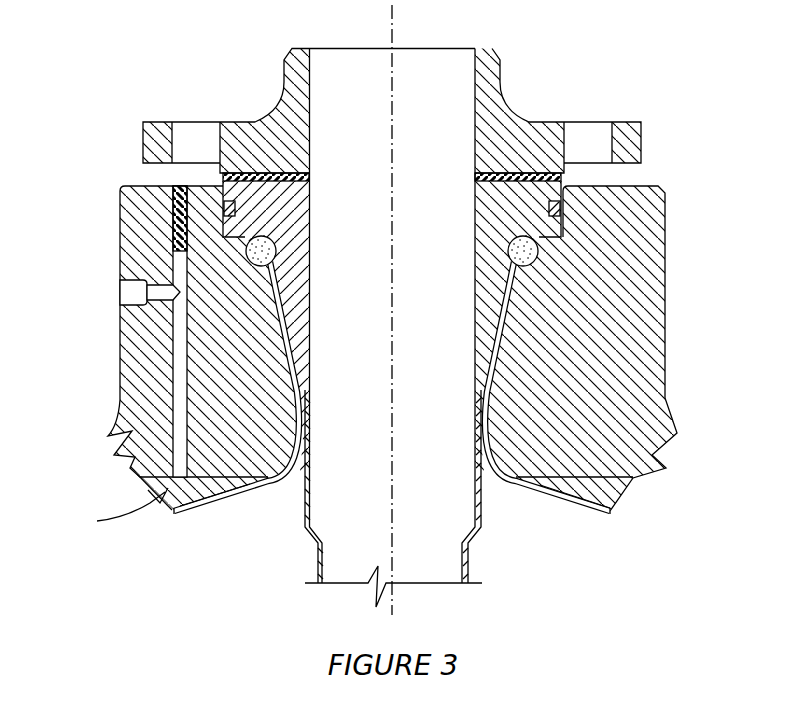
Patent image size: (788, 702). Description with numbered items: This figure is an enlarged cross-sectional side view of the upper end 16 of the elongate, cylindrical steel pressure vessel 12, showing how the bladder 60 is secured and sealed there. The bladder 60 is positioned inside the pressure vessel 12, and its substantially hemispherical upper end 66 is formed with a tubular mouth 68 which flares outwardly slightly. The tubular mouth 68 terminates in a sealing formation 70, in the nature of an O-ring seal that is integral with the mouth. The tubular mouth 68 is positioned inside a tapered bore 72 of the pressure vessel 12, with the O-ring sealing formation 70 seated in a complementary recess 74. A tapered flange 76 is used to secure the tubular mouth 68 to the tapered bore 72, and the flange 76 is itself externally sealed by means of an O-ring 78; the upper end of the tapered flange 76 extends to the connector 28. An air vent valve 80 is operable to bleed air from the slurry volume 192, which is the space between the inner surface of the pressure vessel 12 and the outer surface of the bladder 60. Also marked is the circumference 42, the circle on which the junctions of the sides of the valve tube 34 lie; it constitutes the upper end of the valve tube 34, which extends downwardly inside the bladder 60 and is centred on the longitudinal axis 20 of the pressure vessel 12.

The pressure vessel 12 is at (137, 430).
The upper end 16 is at (663, 355).
The longitudinal axis 20 is at (395, 483).
The connector 28 is at (496, 78).
The valve tube 34 is at (470, 568).
The circumference 42 is at (484, 515).
The bladder 60 is at (208, 500).
The upper end 66 is at (602, 495).
The tubular mouth 68 is at (512, 296).
The sealing formation 70 is at (540, 252).
The tapered bore 72 is at (293, 356).
The recess 74 is at (243, 253).
The tapered flange 76 is at (291, 232).
The O-ring 78 is at (221, 207).
The air vent valve 80 is at (137, 293).
The slurry volume 192 is at (180, 487).